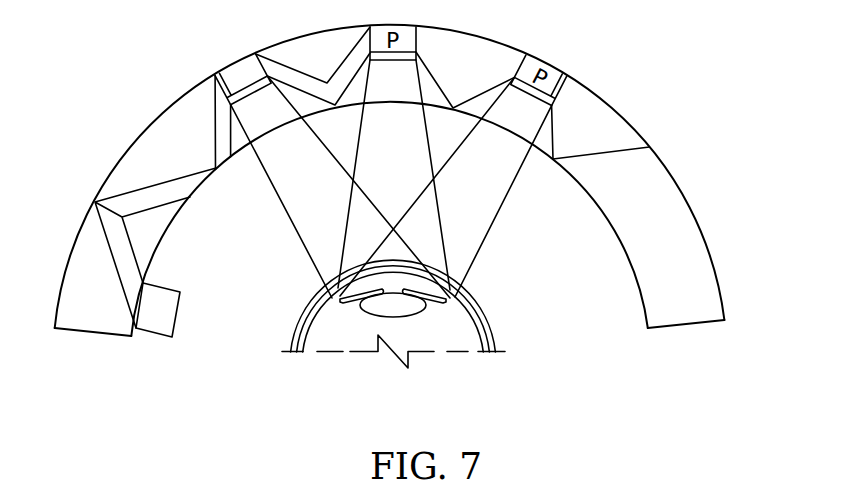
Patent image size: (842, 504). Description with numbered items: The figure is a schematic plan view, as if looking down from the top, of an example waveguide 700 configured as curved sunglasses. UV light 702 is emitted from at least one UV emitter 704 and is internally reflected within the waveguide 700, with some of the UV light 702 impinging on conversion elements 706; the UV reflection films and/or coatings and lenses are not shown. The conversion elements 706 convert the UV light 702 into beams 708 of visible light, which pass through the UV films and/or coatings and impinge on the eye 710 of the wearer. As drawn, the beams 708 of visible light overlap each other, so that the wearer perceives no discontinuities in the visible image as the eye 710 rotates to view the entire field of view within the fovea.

The waveguide 700 is at (710, 258).
The UV light 702 is at (122, 194).
The UV emitter 704 is at (177, 313).
The conversion elements 706 is at (240, 60).
The beams of visible light 708 is at (300, 215).
The eye 710 is at (433, 340).